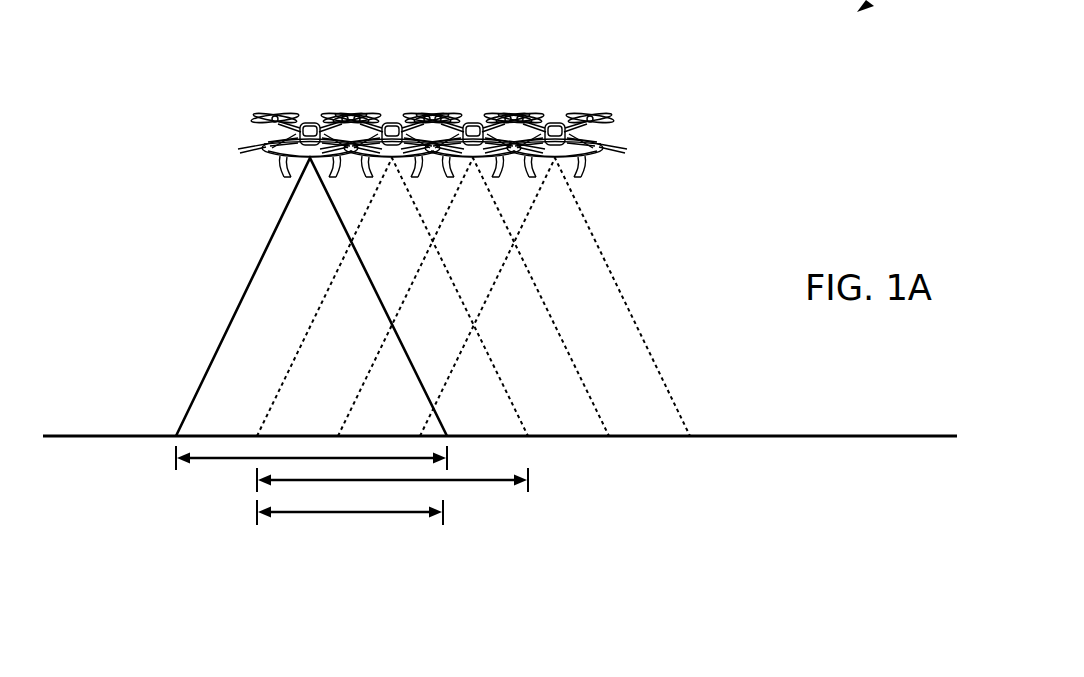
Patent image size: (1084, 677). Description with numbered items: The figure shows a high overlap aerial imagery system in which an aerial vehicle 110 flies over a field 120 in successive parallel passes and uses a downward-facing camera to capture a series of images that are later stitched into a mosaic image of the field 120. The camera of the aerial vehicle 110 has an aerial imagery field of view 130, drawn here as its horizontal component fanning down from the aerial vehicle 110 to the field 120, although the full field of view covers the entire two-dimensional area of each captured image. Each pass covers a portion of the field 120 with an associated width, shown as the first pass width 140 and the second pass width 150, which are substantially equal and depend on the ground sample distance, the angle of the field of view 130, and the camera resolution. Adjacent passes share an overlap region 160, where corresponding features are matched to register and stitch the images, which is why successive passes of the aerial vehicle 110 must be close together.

The aerial vehicle 110 is at (262, 120).
The field 120 is at (77, 433).
The aerial imagery field of view 130 is at (353, 245).
The first pass width 140 is at (172, 463).
The second pass width 150 is at (533, 490).
The overlap region 160 is at (338, 523).